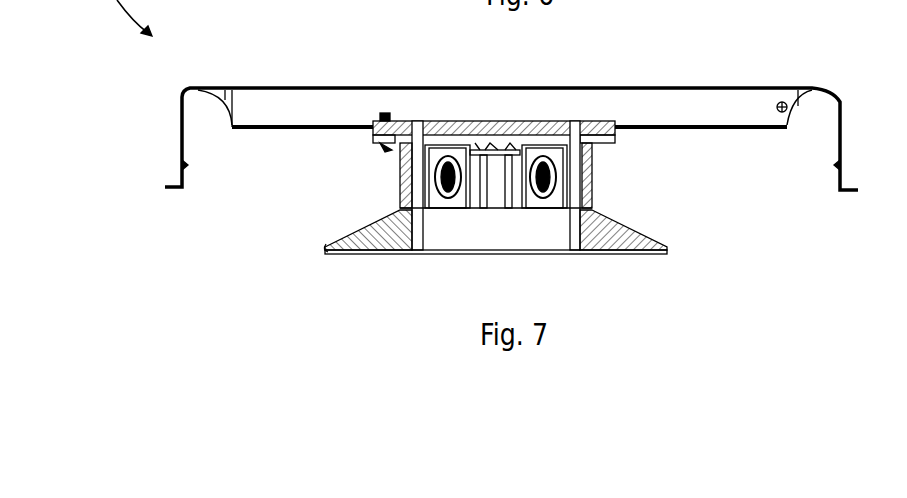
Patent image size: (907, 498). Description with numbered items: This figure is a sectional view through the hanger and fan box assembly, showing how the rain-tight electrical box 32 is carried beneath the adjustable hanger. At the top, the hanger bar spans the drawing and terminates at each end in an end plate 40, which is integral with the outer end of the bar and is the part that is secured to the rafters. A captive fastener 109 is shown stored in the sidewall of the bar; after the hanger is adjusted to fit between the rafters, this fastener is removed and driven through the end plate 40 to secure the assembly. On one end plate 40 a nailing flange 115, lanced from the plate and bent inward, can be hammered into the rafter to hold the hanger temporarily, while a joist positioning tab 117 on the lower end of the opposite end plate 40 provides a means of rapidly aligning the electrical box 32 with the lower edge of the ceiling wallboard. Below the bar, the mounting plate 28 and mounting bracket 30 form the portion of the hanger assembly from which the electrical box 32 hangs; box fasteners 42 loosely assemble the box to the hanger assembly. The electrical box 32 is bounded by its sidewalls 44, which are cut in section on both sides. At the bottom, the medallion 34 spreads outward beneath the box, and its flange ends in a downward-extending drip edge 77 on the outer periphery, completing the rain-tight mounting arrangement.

The mounting plate 28 is at (593, 121).
The mounting bracket 30 is at (617, 140).
The rain-tight electrical box 32 is at (592, 170).
The medallion 34 is at (667, 246).
The end plate 40 is at (182, 127).
The box fasteners 42 is at (385, 150).
The sidewalls 44 is at (400, 183).
The drip edge 77 is at (327, 254).
The captive fastener 109 is at (782, 102).
The nailing flange 115 is at (186, 167).
The joist positioning tab 117 is at (850, 190).